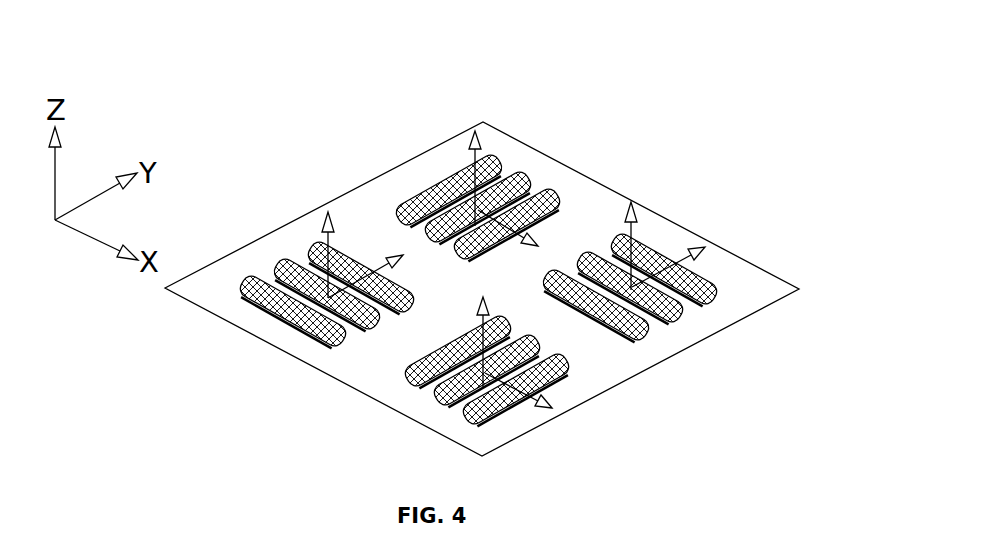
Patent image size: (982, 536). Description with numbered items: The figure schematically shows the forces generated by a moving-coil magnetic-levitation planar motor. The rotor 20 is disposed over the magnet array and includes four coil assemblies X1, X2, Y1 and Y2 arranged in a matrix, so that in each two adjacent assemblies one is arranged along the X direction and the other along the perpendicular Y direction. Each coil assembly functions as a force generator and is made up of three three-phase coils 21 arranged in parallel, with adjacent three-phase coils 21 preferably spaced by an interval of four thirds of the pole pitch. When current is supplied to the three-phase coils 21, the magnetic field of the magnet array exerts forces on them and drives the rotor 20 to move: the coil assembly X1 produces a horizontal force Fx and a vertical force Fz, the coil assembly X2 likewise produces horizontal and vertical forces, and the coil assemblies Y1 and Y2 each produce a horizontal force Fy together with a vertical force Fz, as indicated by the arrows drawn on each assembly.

The rotor 20 is at (583, 188).
The three-phase coil 21 is at (653, 330).
The coil assembly X1 is at (428, 173).
The coil assembly X2 is at (425, 398).
The coil assembly Y1 is at (702, 295).
The coil assembly Y2 is at (253, 312).